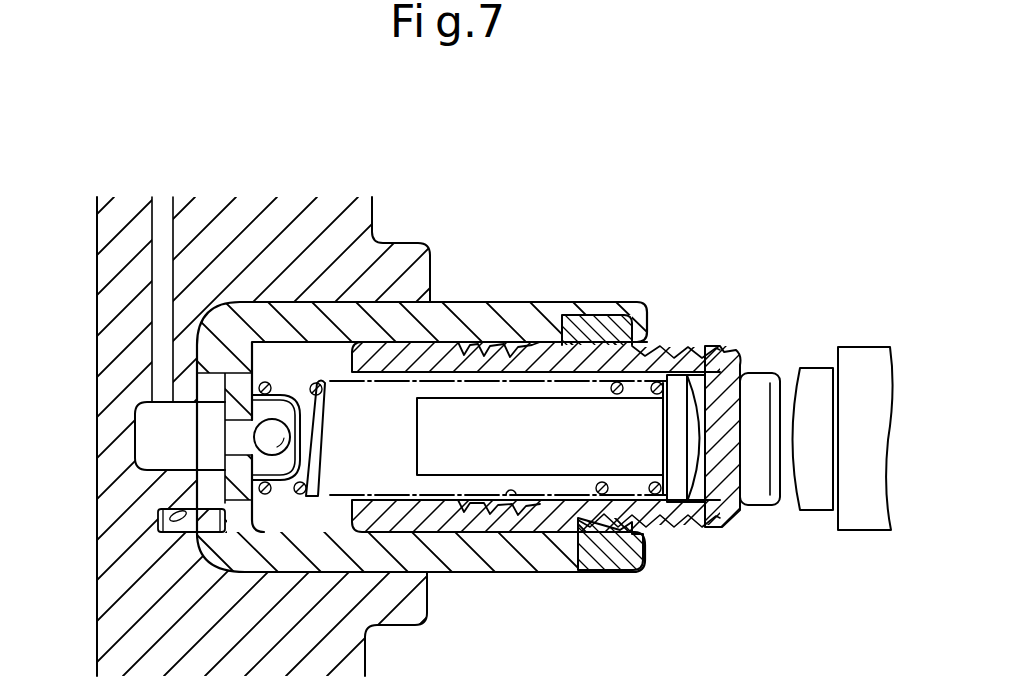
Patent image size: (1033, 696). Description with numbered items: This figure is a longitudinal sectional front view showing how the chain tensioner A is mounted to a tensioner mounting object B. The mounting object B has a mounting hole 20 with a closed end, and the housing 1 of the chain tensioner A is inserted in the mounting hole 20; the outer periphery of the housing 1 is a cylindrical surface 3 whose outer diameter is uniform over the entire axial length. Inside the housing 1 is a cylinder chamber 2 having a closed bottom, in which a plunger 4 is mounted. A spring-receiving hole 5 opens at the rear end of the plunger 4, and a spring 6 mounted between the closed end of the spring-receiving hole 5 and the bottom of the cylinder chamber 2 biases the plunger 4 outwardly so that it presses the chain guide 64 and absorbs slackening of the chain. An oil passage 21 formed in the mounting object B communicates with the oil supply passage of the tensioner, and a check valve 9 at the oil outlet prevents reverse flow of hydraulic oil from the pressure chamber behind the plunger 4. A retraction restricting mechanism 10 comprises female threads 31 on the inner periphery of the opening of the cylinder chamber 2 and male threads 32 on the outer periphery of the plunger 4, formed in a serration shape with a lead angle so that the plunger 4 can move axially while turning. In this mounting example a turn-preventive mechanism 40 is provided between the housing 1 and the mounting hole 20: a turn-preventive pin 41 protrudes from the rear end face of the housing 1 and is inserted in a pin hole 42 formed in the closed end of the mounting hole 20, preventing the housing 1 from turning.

The housing 1 is at (480, 302).
The cylinder chamber 2 is at (508, 344).
The cylindrical surface 3 is at (556, 300).
The plunger 4 is at (432, 525).
The spring-receiving hole 5 is at (514, 497).
The spring 6 is at (656, 500).
The check valve 9 is at (214, 431).
The retraction restricting mechanism 10 is at (603, 308).
The mounting hole 20 is at (253, 301).
The oil passage 21 is at (162, 206).
The female threads 31 is at (648, 318).
The male threads 32 is at (668, 346).
The turn-preventive mechanism 40 is at (154, 541).
The turn-preventive pin 41 is at (157, 522).
The pin hole 42 is at (168, 514).
The chain guide 64 is at (862, 352).
The chain tensioner A is at (652, 292).
The mounting object B is at (92, 289).